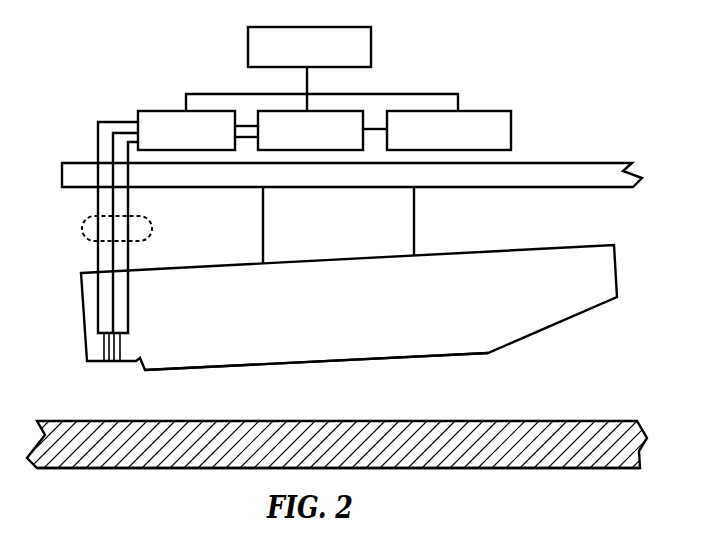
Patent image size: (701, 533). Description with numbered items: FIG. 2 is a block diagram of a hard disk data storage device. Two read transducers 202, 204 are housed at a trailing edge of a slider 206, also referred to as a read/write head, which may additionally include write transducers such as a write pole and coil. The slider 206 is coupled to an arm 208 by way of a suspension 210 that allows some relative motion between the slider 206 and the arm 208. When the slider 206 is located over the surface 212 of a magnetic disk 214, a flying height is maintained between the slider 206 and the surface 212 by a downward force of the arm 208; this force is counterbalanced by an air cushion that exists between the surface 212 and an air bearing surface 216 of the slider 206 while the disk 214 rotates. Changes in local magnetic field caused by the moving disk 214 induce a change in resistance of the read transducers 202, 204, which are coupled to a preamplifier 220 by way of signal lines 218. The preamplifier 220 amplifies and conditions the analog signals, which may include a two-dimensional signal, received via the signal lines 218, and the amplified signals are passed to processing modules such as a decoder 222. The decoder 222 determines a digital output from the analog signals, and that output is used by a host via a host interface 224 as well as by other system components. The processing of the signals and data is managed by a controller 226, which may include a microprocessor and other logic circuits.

The read transducer 202 is at (105, 362).
The read transducer 204 is at (118, 364).
The slider 206 is at (525, 257).
The arm 208 is at (570, 170).
The suspension 210 is at (414, 218).
The surface 212 is at (528, 421).
The magnetic disk 214 is at (503, 455).
The air bearing surface 216 is at (368, 357).
The signal lines 218 is at (93, 218).
The preamplifier 220 is at (153, 109).
The decoder 222 is at (282, 111).
The host interface 224 is at (477, 109).
The controller 226 is at (248, 52).